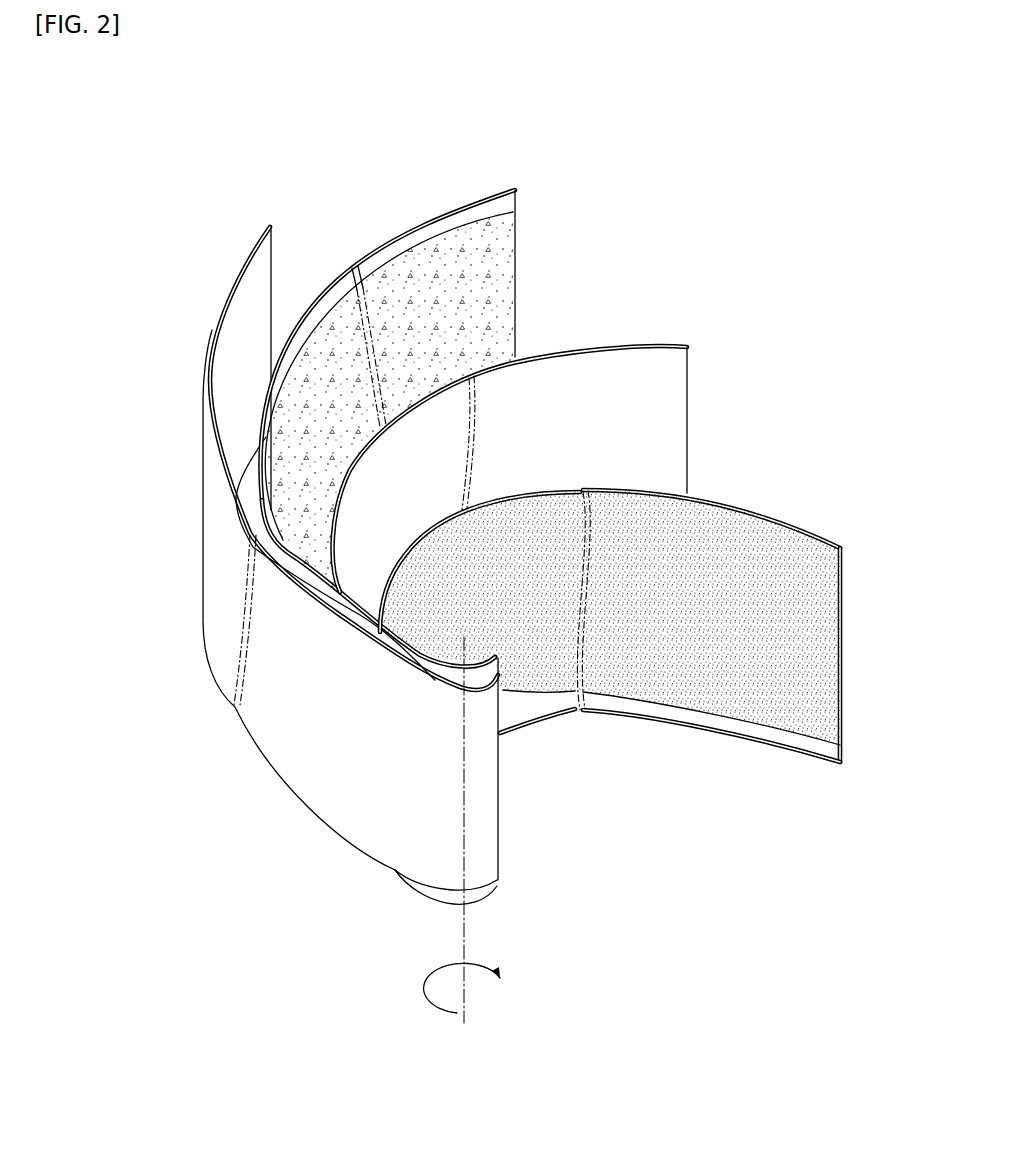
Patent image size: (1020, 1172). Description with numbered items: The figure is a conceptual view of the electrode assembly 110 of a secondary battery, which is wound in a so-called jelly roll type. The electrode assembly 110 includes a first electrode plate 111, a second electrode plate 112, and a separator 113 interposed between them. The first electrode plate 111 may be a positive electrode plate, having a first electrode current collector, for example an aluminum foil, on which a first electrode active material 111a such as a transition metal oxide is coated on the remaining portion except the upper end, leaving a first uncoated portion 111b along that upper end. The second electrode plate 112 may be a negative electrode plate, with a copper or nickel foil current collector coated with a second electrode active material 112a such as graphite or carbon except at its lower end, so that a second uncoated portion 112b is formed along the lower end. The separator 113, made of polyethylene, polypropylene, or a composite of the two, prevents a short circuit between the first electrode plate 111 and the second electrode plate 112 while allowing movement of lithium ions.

The electrode assembly 110 is at (177, 105).
The first electrode plate 111 is at (520, 180).
The first electrode active material 111a is at (503, 248).
The first uncoated portion 111b is at (432, 228).
The second electrode plate 112 is at (850, 540).
The second electrode active material 112a is at (757, 538).
The second uncoated portion 112b is at (702, 713).
The separator 113 is at (647, 345).